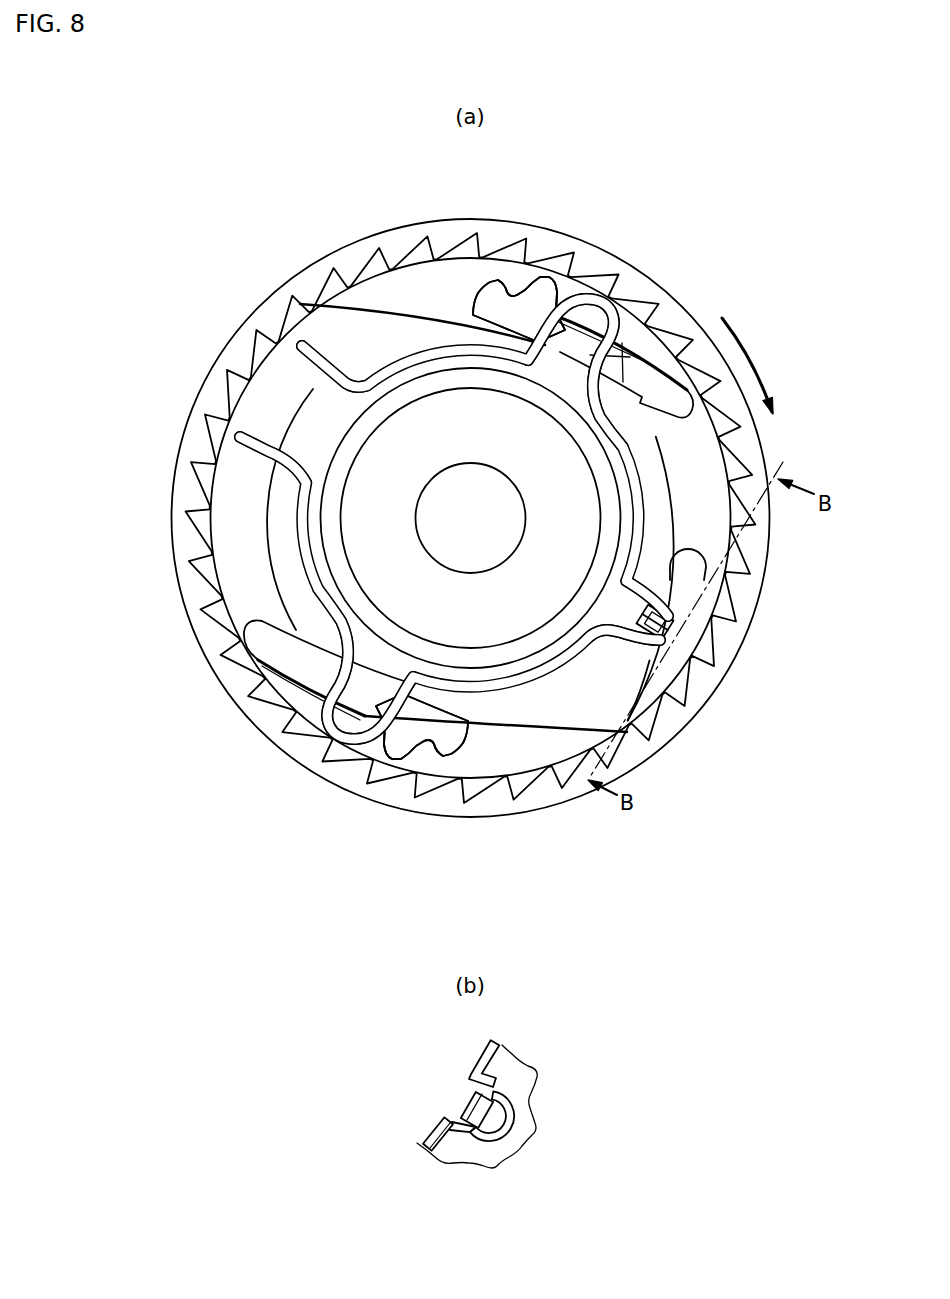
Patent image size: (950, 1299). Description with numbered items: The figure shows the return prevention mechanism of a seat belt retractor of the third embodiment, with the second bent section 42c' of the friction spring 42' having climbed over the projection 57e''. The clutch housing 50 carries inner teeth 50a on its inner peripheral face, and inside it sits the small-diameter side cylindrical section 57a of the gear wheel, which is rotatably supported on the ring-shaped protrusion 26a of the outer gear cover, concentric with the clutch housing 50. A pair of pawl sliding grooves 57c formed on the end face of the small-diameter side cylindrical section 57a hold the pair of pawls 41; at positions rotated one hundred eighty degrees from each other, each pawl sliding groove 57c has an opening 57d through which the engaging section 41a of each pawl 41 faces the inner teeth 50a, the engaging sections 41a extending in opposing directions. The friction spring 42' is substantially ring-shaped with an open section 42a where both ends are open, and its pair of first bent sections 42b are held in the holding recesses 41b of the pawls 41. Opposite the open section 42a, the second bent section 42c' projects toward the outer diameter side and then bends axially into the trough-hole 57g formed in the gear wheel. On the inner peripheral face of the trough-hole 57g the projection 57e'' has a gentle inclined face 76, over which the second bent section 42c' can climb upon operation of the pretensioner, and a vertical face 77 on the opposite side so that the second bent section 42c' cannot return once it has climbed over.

The clutch housing 50 is at (708, 325).
The inner teeth 50a is at (357, 262).
The protrusion 26a is at (512, 672).
The small-diameter side cylindrical section 57a is at (692, 512).
The pawl sliding groove 57c is at (672, 395).
The opening 57d is at (345, 303).
The trough-hole 57g is at (692, 606).
The projection 57e'' is at (640, 895).
The gentle inclined face 76 is at (503, 1096).
The vertical face 77 is at (650, 690).
The pawl 41 is at (470, 518).
The engaging section 41a is at (511, 273).
The holding recess 41b is at (584, 345).
The friction spring 42' is at (454, 448).
The open section 42a is at (320, 413).
The first bent section 42b is at (641, 375).
The second bent section 42c' is at (721, 614).